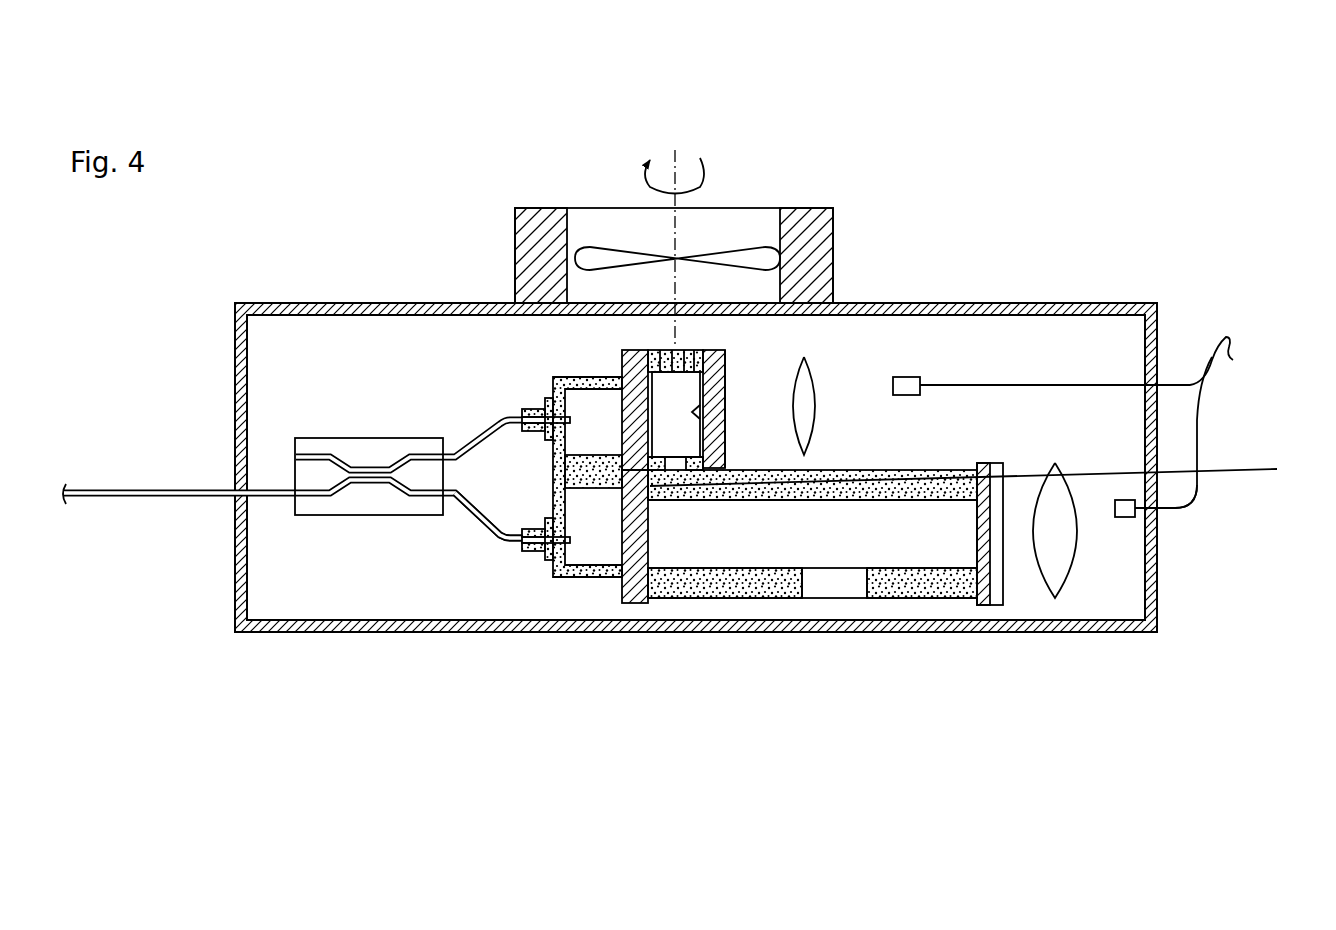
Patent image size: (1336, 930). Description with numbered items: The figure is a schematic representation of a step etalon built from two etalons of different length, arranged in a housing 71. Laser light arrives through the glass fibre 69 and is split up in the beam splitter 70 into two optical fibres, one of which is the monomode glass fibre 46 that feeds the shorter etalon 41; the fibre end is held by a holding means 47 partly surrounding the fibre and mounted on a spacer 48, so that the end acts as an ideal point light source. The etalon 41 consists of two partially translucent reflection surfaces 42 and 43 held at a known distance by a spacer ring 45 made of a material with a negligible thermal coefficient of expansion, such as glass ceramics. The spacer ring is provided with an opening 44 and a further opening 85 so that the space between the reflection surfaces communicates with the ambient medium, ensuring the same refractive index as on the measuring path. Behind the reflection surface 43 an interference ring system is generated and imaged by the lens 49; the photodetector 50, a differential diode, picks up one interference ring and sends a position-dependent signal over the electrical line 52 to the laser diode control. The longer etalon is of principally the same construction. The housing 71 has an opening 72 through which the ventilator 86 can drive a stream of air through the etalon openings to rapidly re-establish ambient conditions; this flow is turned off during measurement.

The etalon 41 is at (720, 340).
The reflection surface 42 is at (660, 412).
The reflection surface 43 is at (727, 357).
The opening 44 is at (698, 466).
The spacer ring 45 is at (699, 360).
The optical fibre 46 is at (507, 410).
The fiber ferrule 47 is at (535, 410).
The spacer 48 is at (597, 473).
The lens 49 is at (812, 385).
The photodetector 50 is at (908, 383).
The electrical line 52 is at (1180, 378).
The glass fibre 69 is at (138, 495).
The beam splitter 70 is at (373, 450).
The housing 71 is at (452, 310).
The opening 72 is at (705, 312).
The opening 85 is at (674, 370).
The ventilator 86 is at (590, 257).